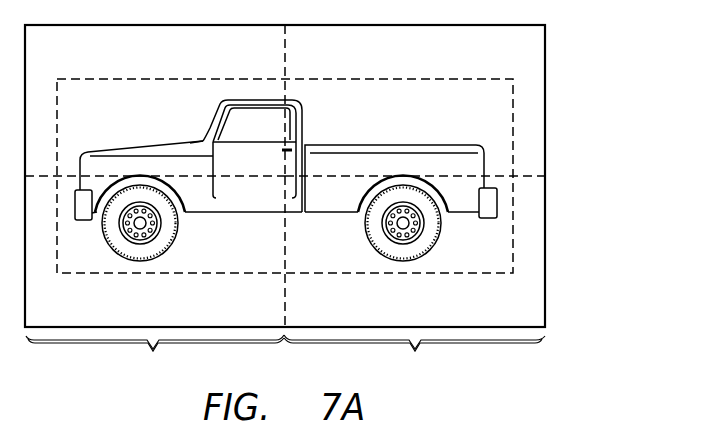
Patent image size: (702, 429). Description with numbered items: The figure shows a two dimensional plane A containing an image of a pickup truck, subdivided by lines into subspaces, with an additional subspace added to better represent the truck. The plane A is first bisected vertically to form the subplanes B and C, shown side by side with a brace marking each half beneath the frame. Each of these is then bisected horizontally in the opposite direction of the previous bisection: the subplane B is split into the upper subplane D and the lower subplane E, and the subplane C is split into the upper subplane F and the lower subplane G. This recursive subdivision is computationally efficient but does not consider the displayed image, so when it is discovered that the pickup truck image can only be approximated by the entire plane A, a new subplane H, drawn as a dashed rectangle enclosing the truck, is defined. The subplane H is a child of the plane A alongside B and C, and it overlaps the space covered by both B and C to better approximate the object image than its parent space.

The two dimensional plane A is at (568, 90).
The subplane B is at (155, 356).
The subplane C is at (414, 356).
The subplane D is at (155, 100).
The subplane E is at (155, 302).
The subplane F is at (415, 108).
The subplane G is at (353, 251).
The new subplane H is at (285, 176).